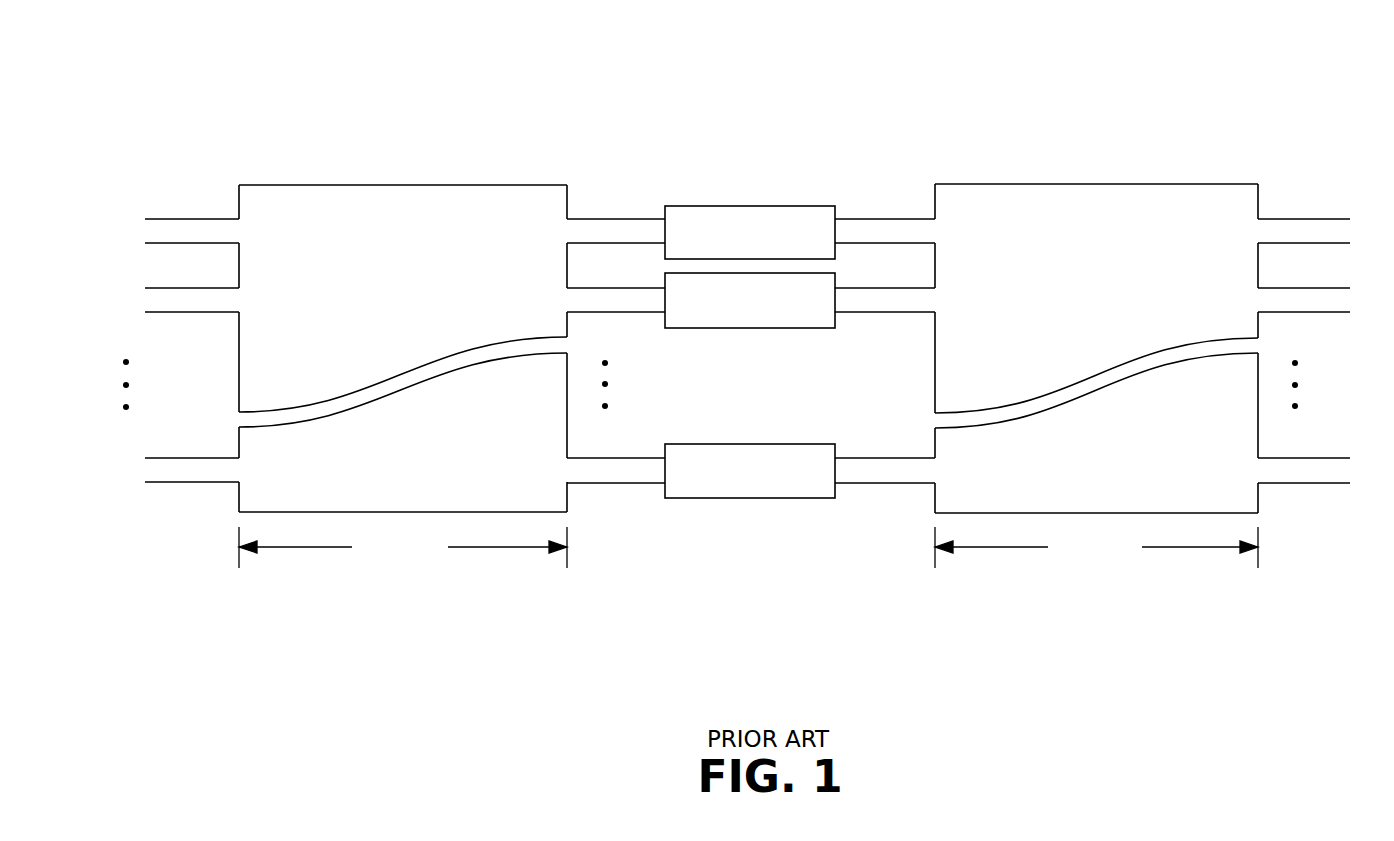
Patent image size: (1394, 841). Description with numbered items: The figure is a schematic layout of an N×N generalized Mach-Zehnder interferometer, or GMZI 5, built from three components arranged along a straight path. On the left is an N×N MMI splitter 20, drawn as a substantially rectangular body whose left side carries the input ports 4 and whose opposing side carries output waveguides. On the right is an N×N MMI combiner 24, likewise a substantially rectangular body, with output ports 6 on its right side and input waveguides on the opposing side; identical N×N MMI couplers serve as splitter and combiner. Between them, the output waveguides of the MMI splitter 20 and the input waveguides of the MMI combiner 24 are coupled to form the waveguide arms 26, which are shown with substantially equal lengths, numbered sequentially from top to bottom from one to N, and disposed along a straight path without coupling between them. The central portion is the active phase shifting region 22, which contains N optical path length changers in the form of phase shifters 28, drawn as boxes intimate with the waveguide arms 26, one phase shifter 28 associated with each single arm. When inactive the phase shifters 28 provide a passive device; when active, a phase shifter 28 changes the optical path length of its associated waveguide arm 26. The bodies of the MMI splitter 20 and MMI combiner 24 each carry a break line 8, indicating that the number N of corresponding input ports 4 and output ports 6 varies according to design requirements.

The N×N GMZI 5 is at (570, 78).
The N×N MMI splitter 20 is at (372, 178).
The N×N MMI combiner 24 is at (1112, 178).
The active phase shifting region 22 is at (768, 384).
The waveguide arms 26 is at (885, 219).
The phase shifters 28 is at (813, 206).
The input ports 4 is at (207, 219).
The output ports 6 is at (1327, 312).
The break line 8 is at (325, 413).